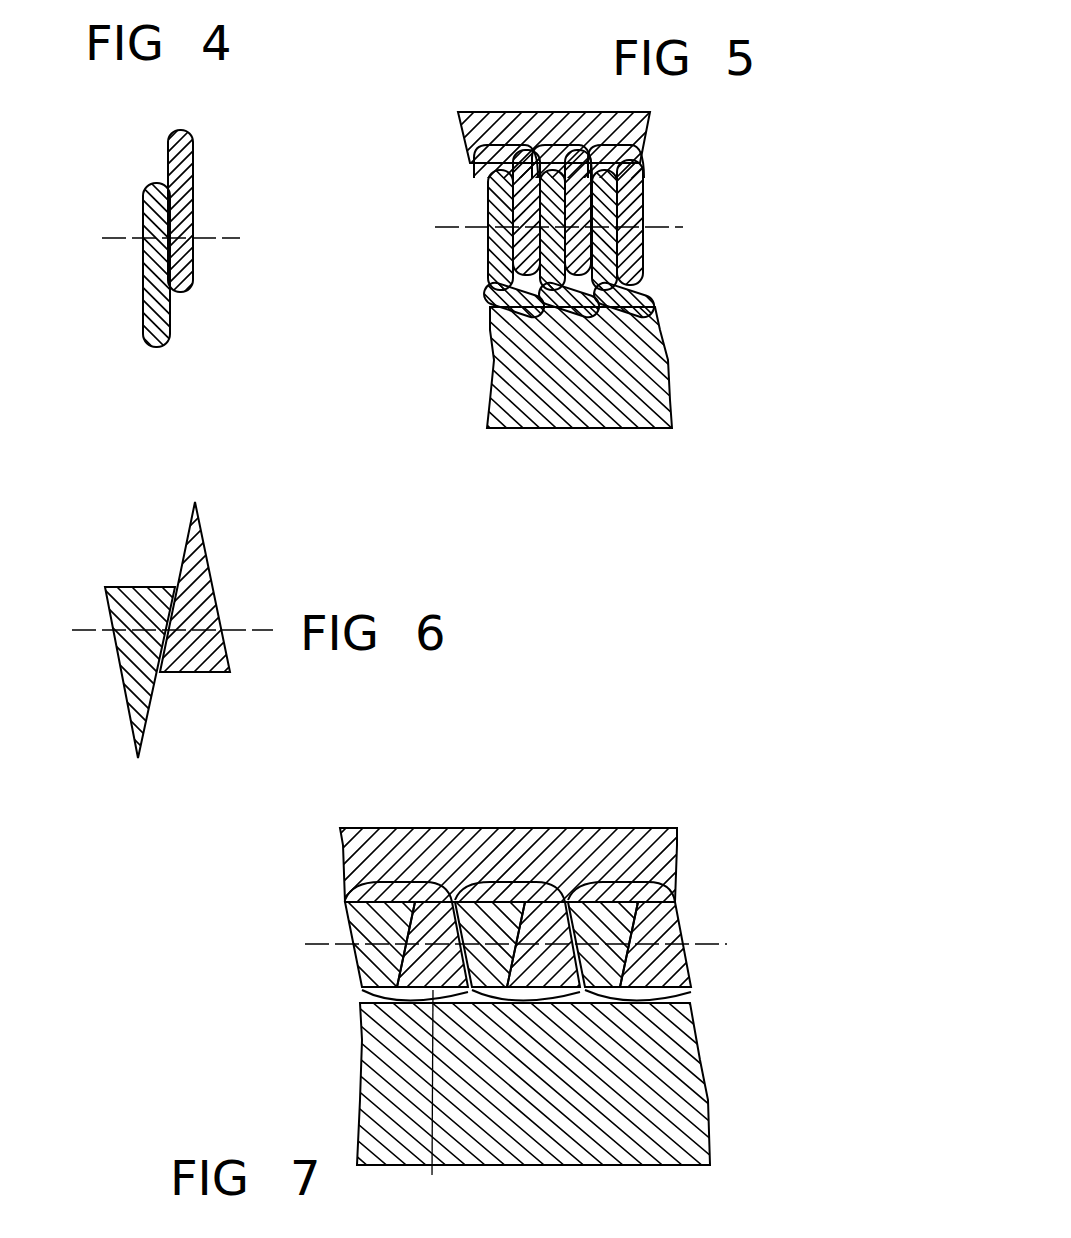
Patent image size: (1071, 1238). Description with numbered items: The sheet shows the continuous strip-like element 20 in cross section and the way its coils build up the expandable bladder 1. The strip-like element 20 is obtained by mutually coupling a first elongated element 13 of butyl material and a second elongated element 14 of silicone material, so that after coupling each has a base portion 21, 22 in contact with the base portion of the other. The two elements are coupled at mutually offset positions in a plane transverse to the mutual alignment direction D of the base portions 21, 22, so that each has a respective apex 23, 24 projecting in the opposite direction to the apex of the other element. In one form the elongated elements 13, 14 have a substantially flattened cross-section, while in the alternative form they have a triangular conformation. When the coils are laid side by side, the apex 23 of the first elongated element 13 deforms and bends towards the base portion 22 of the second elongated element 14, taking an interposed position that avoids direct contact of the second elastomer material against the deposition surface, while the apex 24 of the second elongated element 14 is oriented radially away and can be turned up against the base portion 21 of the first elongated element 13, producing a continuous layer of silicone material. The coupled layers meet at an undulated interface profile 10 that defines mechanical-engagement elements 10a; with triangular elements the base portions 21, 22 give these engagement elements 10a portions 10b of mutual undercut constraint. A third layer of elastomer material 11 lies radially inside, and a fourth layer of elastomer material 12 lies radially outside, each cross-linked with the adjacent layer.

In FIG. 7, the expandable bladder 1 is at (580, 783).
In FIG. 7, the undulated interface profile 10 is at (702, 962).
In FIG. 7, the mechanical-engagement elements 10a is at (607, 927).
In FIG. 7, the portions of mutual undercut constraint 10b is at (482, 907).
In FIG. 5, the third layer of elastomer material 11 is at (618, 410).
In FIG. 7, the third layer of elastomer material 11 is at (655, 1152).
In FIG. 5, the fourth layer of elastomer material 12 is at (488, 121).
In FIG. 7, the fourth layer of elastomer material 12 is at (650, 845).
In FIG. 4, the first elongated element 13 is at (145, 275).
In FIG. 5, the first elongated element 13 is at (603, 247).
In FIG. 6, the first elongated element 13 is at (118, 680).
In FIG. 7, the first elongated element 13 is at (498, 944).
In FIG. 4, the second elongated element 14 is at (193, 170).
In FIG. 5, the second elongated element 14 is at (642, 193).
In FIG. 6, the second elongated element 14 is at (210, 590).
In FIG. 7, the second elongated element 14 is at (543, 944).
In FIG. 4, the continuous strip-like element 20 is at (182, 328).
In FIG. 6, the continuous strip-like element 20 is at (182, 737).
In FIG. 4, the base portion of first elongated element 21 is at (148, 192).
In FIG. 6, the base portion of first elongated element 21 is at (128, 598).
In FIG. 4, the base portion of second elongated element 22 is at (192, 278).
In FIG. 6, the base portion of second elongated element 22 is at (207, 665).
In FIG. 4, the apex of first elongated element 23 is at (152, 343).
In FIG. 5, the apex of first elongated element 23 is at (640, 297).
In FIG. 6, the apex of first elongated element 23 is at (135, 735).
In FIG. 7, the apex of first elongated element 23 is at (430, 990).
In FIG. 4, the apex of second elongated element 24 is at (180, 132).
In FIG. 5, the apex of second elongated element 24 is at (600, 152).
In FIG. 6, the apex of second elongated element 24 is at (193, 525).
In FIG. 7, the apex of second elongated element 24 is at (400, 890).
In FIG. 4, the mutual alignment direction of the base portions D is at (113, 237).
In FIG. 5, the mutual alignment direction of the base portions D is at (450, 228).
In FIG. 6, the mutual alignment direction of the base portions D is at (82, 630).